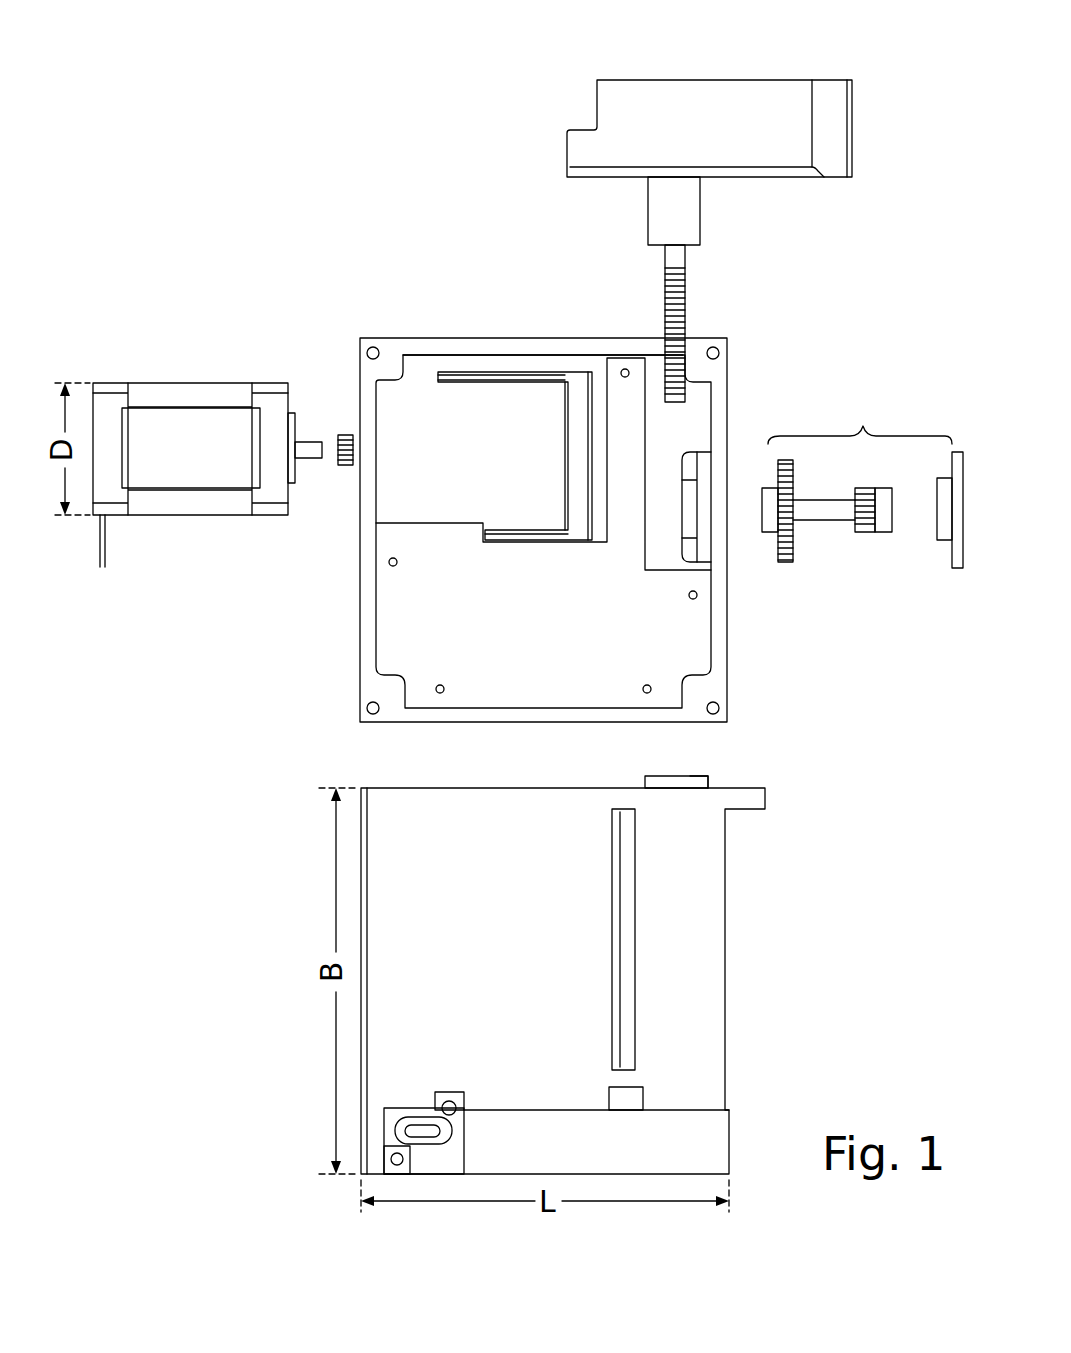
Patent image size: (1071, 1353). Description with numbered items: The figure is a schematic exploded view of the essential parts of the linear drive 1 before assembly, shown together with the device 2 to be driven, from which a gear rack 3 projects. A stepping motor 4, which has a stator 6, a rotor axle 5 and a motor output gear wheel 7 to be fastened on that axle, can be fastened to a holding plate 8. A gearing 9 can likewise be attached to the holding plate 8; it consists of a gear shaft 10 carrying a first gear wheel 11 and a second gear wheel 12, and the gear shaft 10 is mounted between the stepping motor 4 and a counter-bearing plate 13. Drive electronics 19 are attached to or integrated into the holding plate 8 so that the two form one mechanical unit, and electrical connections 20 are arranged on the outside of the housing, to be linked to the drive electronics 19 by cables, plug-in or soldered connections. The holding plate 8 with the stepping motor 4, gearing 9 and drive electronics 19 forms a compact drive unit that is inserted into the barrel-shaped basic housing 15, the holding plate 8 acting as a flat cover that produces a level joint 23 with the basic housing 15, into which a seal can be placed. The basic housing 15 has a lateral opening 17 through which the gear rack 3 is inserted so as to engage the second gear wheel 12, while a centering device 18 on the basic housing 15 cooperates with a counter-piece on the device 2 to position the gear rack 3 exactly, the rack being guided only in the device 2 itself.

The linear drive 1 is at (372, 282).
The device to be driven 2 is at (771, 100).
The gear rack 3 is at (683, 300).
The stepping motor 4 is at (213, 475).
The rotor axle 5 is at (307, 450).
The stator 6 is at (153, 505).
The motor output gear wheel 7 is at (343, 468).
The holding plate 8 is at (727, 612).
The gearing 9 is at (860, 409).
The gear shaft 10 is at (820, 515).
The first gear wheel 11 is at (790, 563).
The second gear wheel 12 is at (862, 528).
The counter-bearing plate 13 is at (960, 570).
The basic housing 15 is at (729, 948).
The lateral opening 17 is at (686, 770).
The centering device 18 is at (708, 778).
The drive electronics 19 is at (437, 623).
The electrical connections 20 is at (414, 1131).
The level joint 23 is at (490, 343).